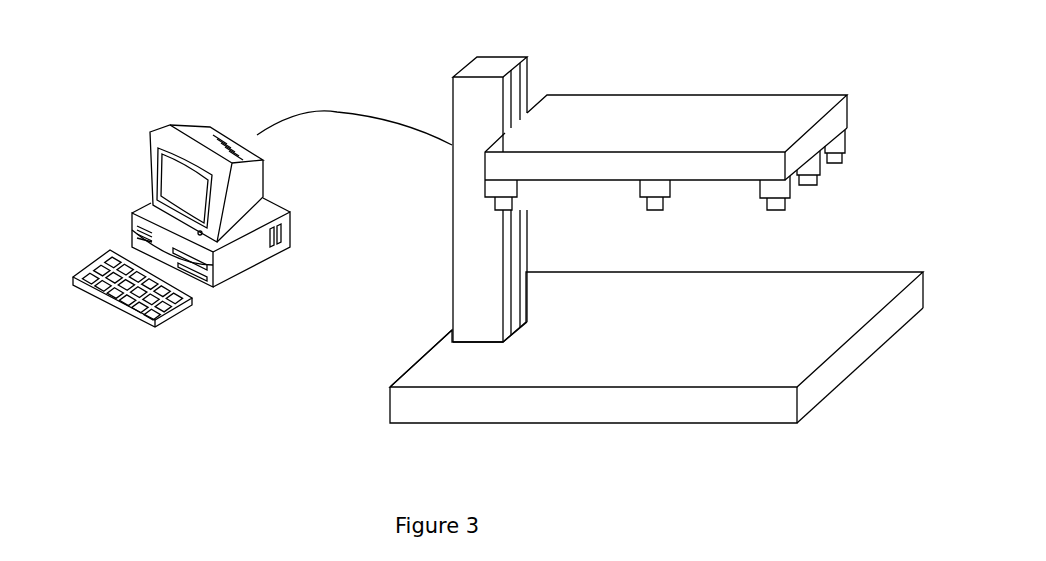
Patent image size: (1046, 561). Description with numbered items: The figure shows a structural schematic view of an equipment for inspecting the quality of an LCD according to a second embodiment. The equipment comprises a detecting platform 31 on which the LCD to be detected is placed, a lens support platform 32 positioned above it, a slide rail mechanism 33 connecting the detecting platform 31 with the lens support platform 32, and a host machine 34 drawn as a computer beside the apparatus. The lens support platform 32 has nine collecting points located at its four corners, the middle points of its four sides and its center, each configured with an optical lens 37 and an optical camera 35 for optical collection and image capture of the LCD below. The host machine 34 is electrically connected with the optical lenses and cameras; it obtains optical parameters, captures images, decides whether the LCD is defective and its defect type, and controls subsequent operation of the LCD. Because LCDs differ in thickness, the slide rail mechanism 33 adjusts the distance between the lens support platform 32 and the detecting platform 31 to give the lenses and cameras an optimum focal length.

The detecting platform 31 is at (632, 407).
The lens support platform 32 is at (658, 117).
The slide rail mechanism 33 is at (467, 202).
The host machine 34 is at (223, 272).
The optical camera 35 is at (665, 170).
The optical lens 37 is at (767, 210).